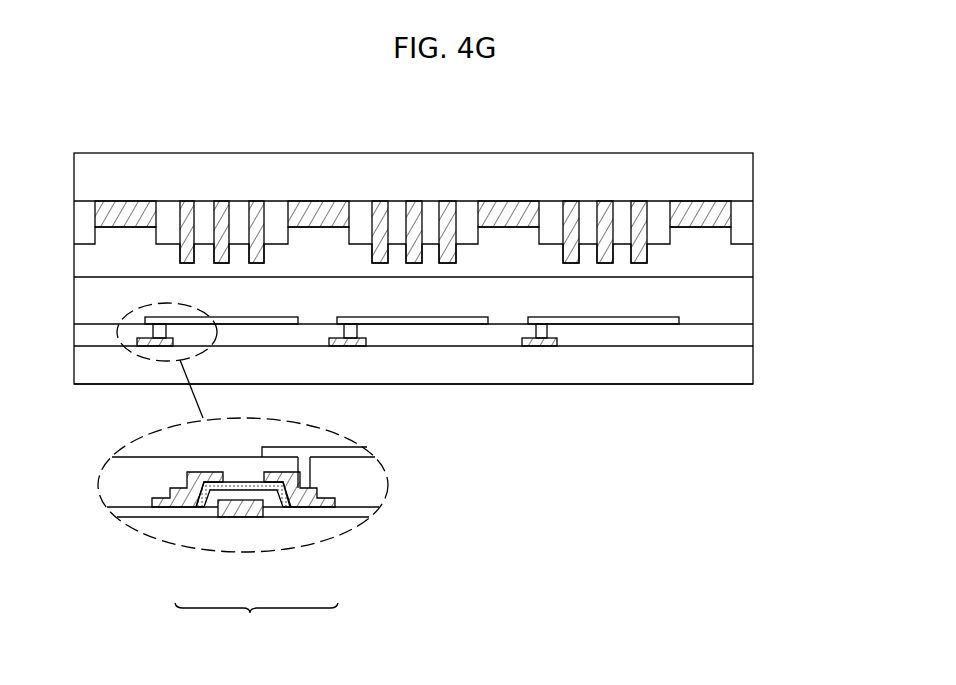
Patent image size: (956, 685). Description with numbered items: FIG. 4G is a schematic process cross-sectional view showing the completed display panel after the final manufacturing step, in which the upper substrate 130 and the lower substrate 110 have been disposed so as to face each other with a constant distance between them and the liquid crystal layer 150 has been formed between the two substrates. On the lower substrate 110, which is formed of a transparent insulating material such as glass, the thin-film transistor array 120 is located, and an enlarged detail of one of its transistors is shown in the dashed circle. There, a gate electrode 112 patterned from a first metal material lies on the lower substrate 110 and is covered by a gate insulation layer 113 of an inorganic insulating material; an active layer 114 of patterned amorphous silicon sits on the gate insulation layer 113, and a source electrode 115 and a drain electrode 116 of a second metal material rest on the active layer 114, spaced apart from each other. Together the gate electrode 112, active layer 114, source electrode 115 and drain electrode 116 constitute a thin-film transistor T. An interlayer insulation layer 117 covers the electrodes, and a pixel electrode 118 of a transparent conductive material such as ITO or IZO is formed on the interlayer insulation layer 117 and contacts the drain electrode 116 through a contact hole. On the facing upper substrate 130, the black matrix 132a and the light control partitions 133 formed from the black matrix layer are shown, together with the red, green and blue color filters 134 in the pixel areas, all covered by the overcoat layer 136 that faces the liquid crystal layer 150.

The lower substrate 110 is at (753, 372).
The gate electrode 112 is at (247, 517).
The gate insulation layer 113 is at (363, 512).
The active layer 114 is at (284, 507).
The source electrode 115 is at (202, 507).
The drain electrode 116 is at (317, 507).
The interlayer insulation layer 117 is at (355, 474).
The pixel electrode 118 is at (335, 452).
The thin-film transistor array 120 is at (760, 317).
The upper substrate 130 is at (753, 173).
The black matrix 132a is at (506, 210).
The light control partition 133 is at (447, 210).
The color filter 134 is at (395, 210).
The overcoat layer 136 is at (753, 257).
The liquid crystal layer 150 is at (753, 301).
The thin-film transistor T is at (256, 620).